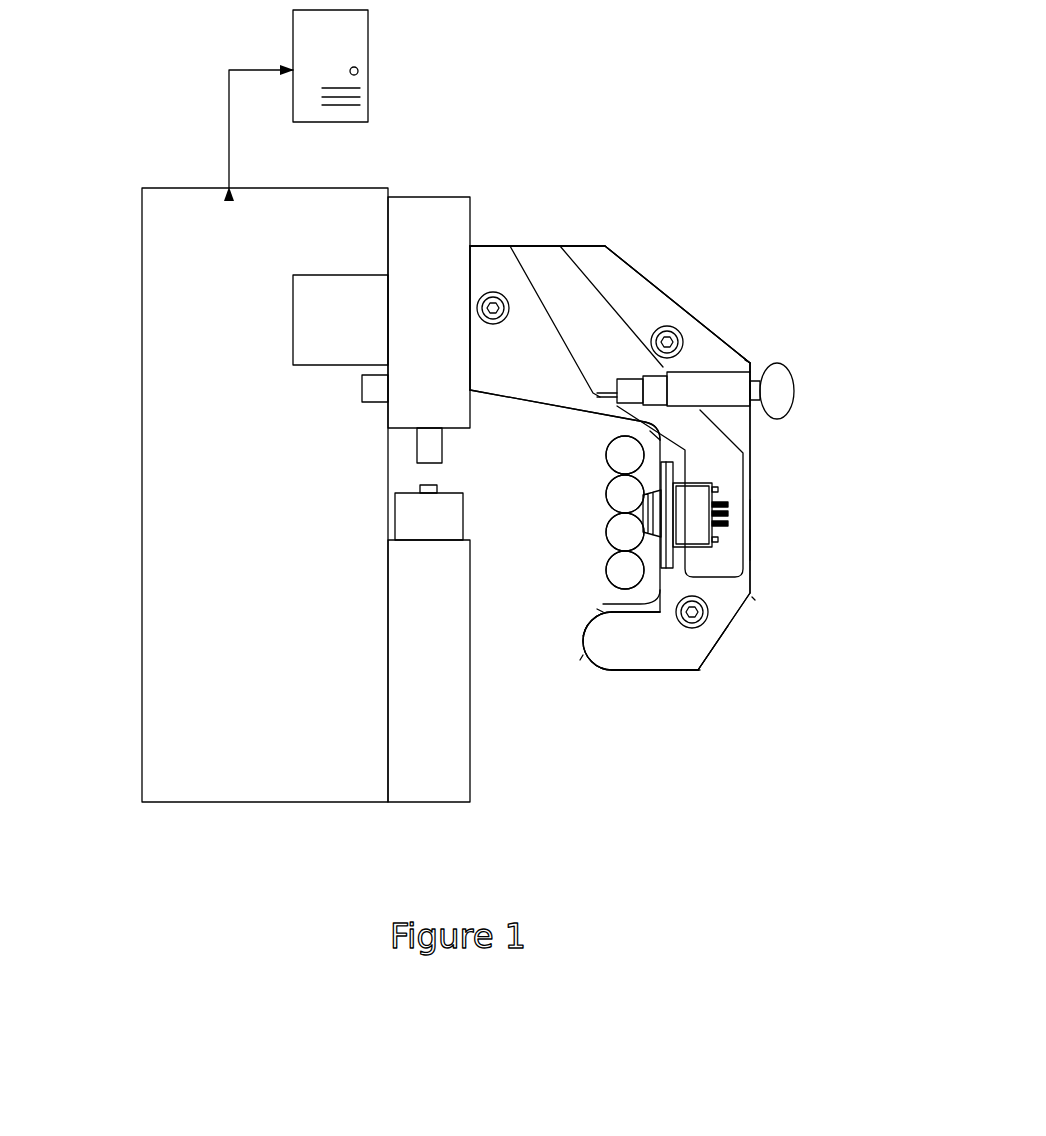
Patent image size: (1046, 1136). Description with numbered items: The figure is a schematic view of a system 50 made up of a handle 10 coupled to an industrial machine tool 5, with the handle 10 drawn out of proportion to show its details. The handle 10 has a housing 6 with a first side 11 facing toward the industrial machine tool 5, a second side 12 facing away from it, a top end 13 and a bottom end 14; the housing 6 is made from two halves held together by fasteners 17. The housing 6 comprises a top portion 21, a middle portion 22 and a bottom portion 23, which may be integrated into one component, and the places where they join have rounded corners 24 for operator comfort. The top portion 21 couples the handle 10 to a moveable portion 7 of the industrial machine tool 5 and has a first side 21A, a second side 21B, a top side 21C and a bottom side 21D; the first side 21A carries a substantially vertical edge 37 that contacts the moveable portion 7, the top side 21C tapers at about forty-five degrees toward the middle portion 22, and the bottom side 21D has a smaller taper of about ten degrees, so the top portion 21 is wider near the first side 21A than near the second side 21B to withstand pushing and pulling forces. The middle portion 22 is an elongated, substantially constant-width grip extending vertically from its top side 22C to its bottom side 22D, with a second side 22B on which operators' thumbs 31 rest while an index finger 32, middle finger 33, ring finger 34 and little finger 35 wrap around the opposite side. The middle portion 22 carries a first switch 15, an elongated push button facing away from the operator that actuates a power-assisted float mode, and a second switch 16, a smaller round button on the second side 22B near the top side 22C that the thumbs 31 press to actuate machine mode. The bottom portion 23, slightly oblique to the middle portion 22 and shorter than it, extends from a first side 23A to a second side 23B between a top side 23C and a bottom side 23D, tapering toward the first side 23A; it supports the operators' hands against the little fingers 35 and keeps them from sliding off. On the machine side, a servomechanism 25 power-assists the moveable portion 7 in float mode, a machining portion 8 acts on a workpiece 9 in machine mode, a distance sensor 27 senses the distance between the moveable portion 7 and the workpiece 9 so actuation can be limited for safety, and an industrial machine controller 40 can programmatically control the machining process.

The industrial machine tool 5 is at (122, 128).
The housing 6 is at (512, 246).
The moveable portion 7 is at (425, 197).
The machining portion 8 is at (442, 445).
The workpiece 9 is at (437, 489).
The handle 10 is at (686, 289).
The first side 11 is at (600, 596).
The second side 12 is at (753, 546).
The top end 13 is at (605, 246).
The bottom end 14 is at (648, 673).
The first switch 15 is at (738, 500).
The second switch 16 is at (745, 418).
The fasteners 17 is at (494, 324).
The top portion 21 is at (640, 246).
The first side 21A is at (470, 312).
The second side 21B is at (642, 272).
The top side 21C is at (560, 246).
The bottom side 21D is at (503, 398).
The middle portion 22 is at (760, 470).
The second side 22B is at (755, 522).
The top side 22C is at (754, 360).
The bottom side 22D is at (752, 597).
The bottom portion 23 is at (590, 675).
The first side 23A is at (583, 648).
The second side 23B is at (697, 672).
The top side 23C is at (625, 613).
The bottom side 23D is at (627, 672).
The rounded corners 24 is at (745, 360).
The servomechanism 25 is at (342, 275).
The distance sensor 27 is at (362, 389).
The thumbs 31 is at (795, 390).
The index finger 32 is at (606, 456).
The middle finger 33 is at (606, 494).
The ring finger 34 is at (606, 532).
The little finger 35 is at (606, 570).
The substantially vertical edge 37 is at (471, 277).
The industrial machine controller 40 is at (370, 68).
The system 50 is at (697, 72).